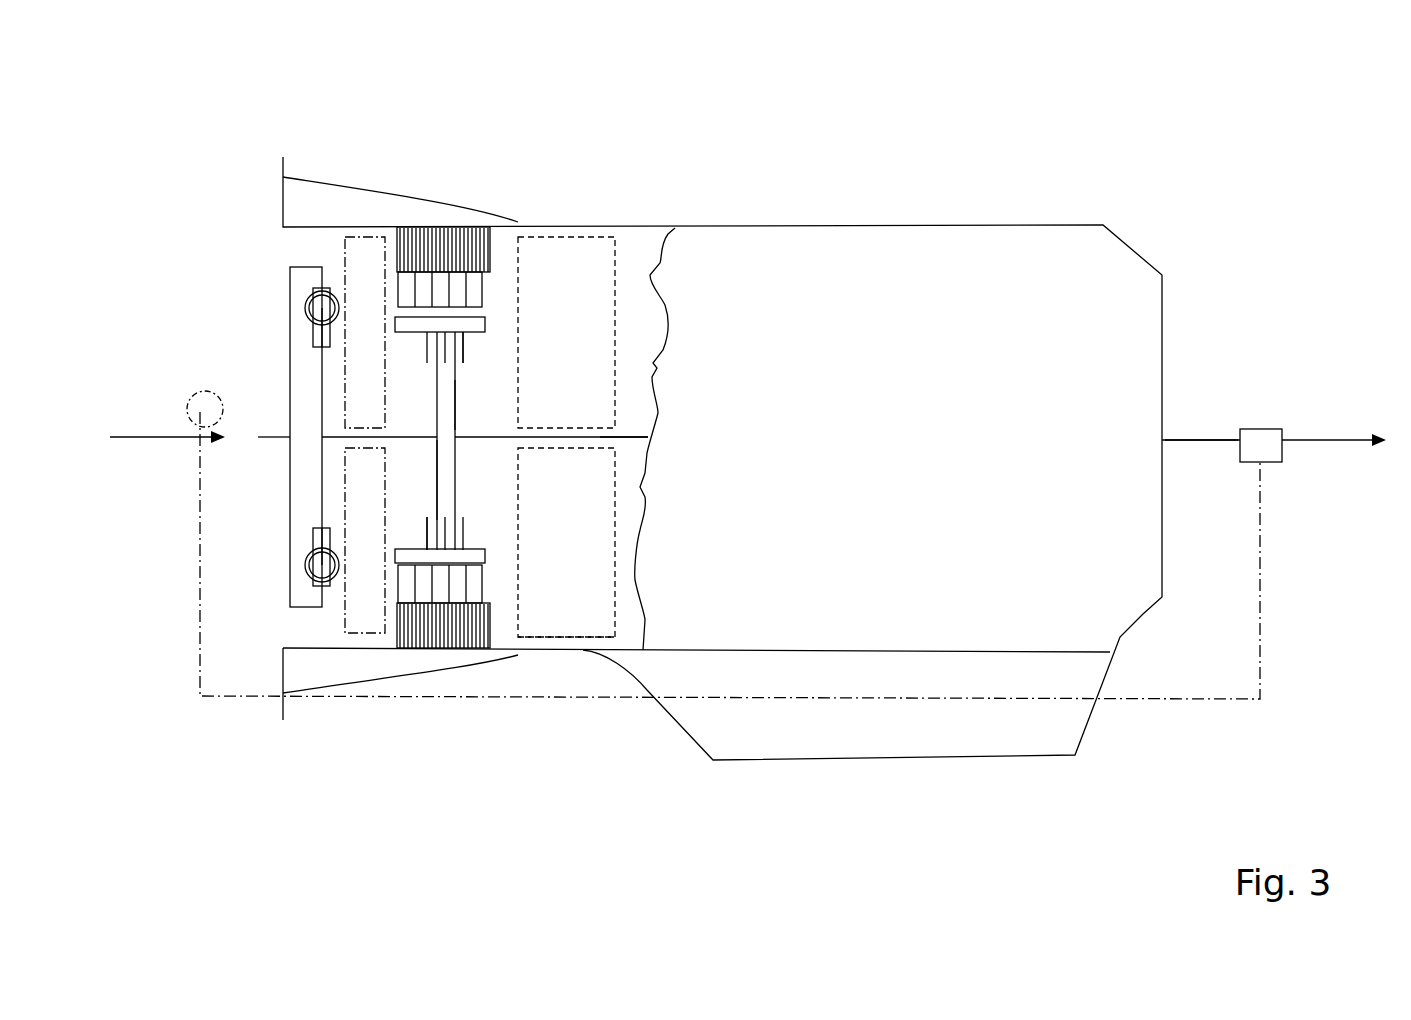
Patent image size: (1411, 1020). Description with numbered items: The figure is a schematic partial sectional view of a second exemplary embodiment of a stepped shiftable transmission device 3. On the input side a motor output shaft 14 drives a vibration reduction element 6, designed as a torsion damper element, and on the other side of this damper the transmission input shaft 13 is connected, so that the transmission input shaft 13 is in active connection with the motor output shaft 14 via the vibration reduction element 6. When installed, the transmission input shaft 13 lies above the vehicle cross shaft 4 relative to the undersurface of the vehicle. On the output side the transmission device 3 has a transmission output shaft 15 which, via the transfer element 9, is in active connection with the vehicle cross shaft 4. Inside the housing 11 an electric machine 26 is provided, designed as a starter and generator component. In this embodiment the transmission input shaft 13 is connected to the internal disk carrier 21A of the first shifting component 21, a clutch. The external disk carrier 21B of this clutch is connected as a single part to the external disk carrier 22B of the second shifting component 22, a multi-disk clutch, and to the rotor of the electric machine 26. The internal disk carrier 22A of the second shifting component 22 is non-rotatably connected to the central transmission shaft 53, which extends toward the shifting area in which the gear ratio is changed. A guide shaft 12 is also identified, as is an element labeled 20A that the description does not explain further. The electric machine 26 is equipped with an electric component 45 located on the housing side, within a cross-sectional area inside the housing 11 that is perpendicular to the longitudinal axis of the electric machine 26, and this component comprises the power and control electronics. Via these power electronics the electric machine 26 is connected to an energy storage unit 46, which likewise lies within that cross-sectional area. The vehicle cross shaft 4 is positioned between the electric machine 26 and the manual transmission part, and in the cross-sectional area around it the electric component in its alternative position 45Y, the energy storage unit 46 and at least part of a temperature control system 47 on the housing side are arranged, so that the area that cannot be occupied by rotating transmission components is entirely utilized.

The transmission device 3 is at (255, 171).
The vehicle cross shaft 4 is at (208, 410).
The vibration reduction element 6 is at (322, 337).
The transfer element 9 is at (1263, 442).
The transmission device housing 11 is at (1163, 555).
The guide shaft 12 is at (1173, 700).
The transmission input shaft 13 is at (345, 435).
The motor output shaft 14 is at (158, 437).
The transmission output shaft 15 is at (1202, 440).
The lower rotor carrier 20A is at (480, 671).
The shifting component, clutch 21 is at (408, 343).
The internal disk carrier 21A is at (437, 485).
The external disk carrier 21B is at (427, 520).
The shifting component, multi-disk clutch 22 is at (497, 308).
The internal disk carrier 22A is at (588, 350).
The external disk carrier 22B is at (477, 352).
The electric machine 26 is at (437, 212).
The electric component 45 is at (362, 255).
The energy storage unit 46 is at (355, 604).
The temperature control device 47 is at (457, 407).
The central transmission shaft 53 is at (633, 436).
The electric component 45Y is at (582, 590).